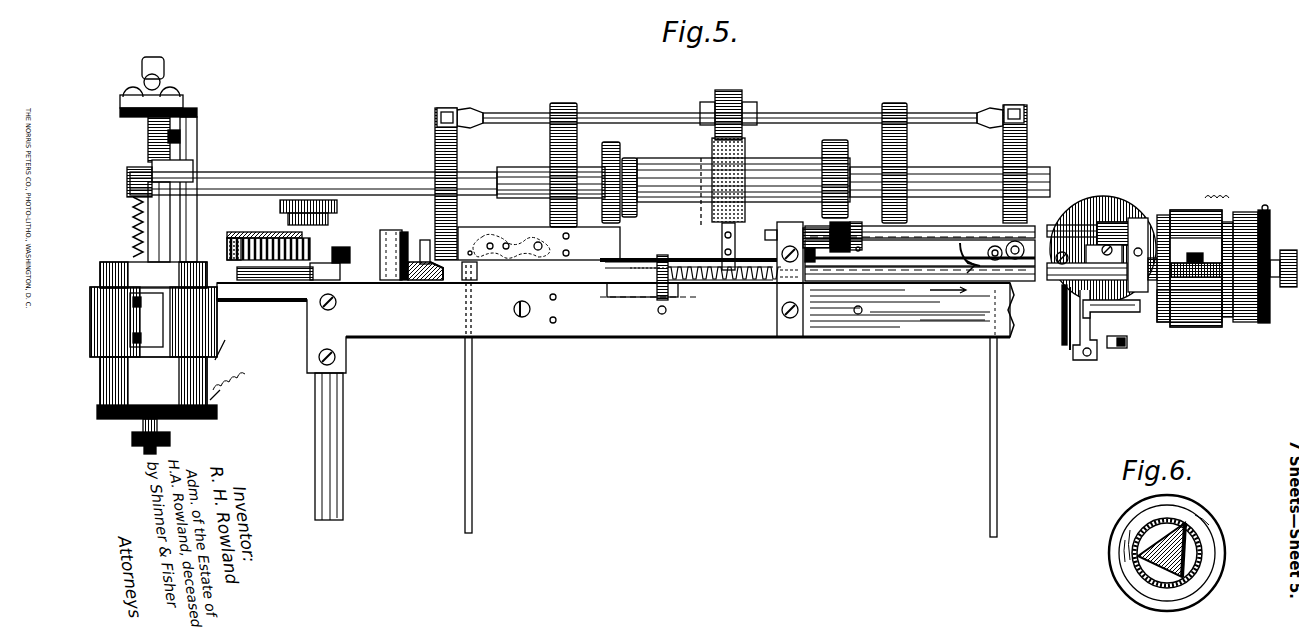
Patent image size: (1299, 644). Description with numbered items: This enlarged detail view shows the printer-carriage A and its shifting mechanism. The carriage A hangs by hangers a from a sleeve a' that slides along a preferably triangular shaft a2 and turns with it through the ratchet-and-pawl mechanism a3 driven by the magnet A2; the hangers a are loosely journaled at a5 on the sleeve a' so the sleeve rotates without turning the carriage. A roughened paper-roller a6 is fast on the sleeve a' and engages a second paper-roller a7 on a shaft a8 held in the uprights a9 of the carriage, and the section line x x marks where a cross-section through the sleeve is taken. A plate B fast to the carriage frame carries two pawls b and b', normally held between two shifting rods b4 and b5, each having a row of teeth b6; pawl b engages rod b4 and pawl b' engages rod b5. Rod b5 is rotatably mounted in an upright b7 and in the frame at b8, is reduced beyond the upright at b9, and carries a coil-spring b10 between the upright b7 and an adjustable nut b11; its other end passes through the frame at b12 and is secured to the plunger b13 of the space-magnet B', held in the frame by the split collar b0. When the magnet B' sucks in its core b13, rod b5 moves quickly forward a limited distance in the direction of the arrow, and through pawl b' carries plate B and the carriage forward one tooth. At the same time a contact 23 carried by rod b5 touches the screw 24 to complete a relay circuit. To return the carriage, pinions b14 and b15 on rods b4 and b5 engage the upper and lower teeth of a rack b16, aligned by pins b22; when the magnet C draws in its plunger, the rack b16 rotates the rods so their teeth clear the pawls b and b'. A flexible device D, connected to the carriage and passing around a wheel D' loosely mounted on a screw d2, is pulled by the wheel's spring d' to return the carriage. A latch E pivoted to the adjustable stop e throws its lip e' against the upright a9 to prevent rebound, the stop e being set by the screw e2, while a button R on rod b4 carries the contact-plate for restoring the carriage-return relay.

In FIG. 5, the printer-carriage A is at (472, 233).
In FIG. 5, the magnet A2 is at (167, 358).
In FIG. 5, the hangers a is at (749, 269).
In FIG. 5, the sleeve a' is at (743, 173).
In FIG. 6, the sleeve a' is at (1184, 528).
In FIG. 5, the triangular shaft a2 is at (518, 180).
In FIG. 6, the triangular shaft a2 is at (1140, 527).
In FIG. 5, the ratchet-and-pawl mechanism a3 is at (150, 190).
In FIG. 5, the journal a5 is at (627, 167).
In FIG. 5, the roughened paper-roller a6 is at (750, 150).
In FIG. 5, the second paper-roller a7 is at (732, 100).
In FIG. 5, the shaft a8 is at (807, 117).
In FIG. 5, the uprights a9 is at (440, 148).
In FIG. 5, the section line x is at (700, 190).
In FIG. 5, the plate B is at (920, 252).
In FIG. 5, the space-magnet B' is at (1264, 270).
In FIG. 5, the pawl b is at (992, 237).
In FIG. 5, the pawl b' is at (920, 292).
In FIG. 5, the split collar b0 is at (1213, 313).
In FIG. 5, the shifting rod b4 is at (1027, 228).
In FIG. 5, the shifting rod b5 is at (1027, 275).
In FIG. 5, the notches or teeth b6 is at (930, 223).
In FIG. 5, the upright b7 is at (783, 284).
In FIG. 5, the bearing in printer-frame b8 is at (1146, 228).
In FIG. 5, the reduced extension of rod b9 is at (695, 278).
In FIG. 5, the coil-spring b10 is at (733, 280).
In FIG. 5, the adjustable nut b11 is at (662, 290).
In FIG. 5, the frame bearing b12 is at (1137, 313).
In FIG. 5, the plunger b13 is at (1160, 266).
In FIG. 5, the pinion b14 is at (1125, 225).
In FIG. 5, the pinion b15 is at (1067, 290).
In FIG. 5, the rack b16 is at (1112, 292).
In FIG. 5, the pins b22 is at (1083, 343).
In FIG. 5, the carriage-return magnet C is at (1102, 205).
In FIG. 5, the flexible device D is at (420, 233).
In FIG. 5, the wheel D' is at (283, 241).
In FIG. 5, the spring d' is at (250, 235).
In FIG. 5, the screw d2 is at (307, 213).
In FIG. 5, the latch E is at (402, 232).
In FIG. 5, the stop e is at (374, 243).
In FIG. 5, the lip e' is at (425, 289).
In FIG. 5, the screw e2 is at (338, 267).
In FIG. 5, the button R is at (823, 265).
In FIG. 5, the contact 23 is at (1068, 313).
In FIG. 5, the screw 24 is at (1112, 345).